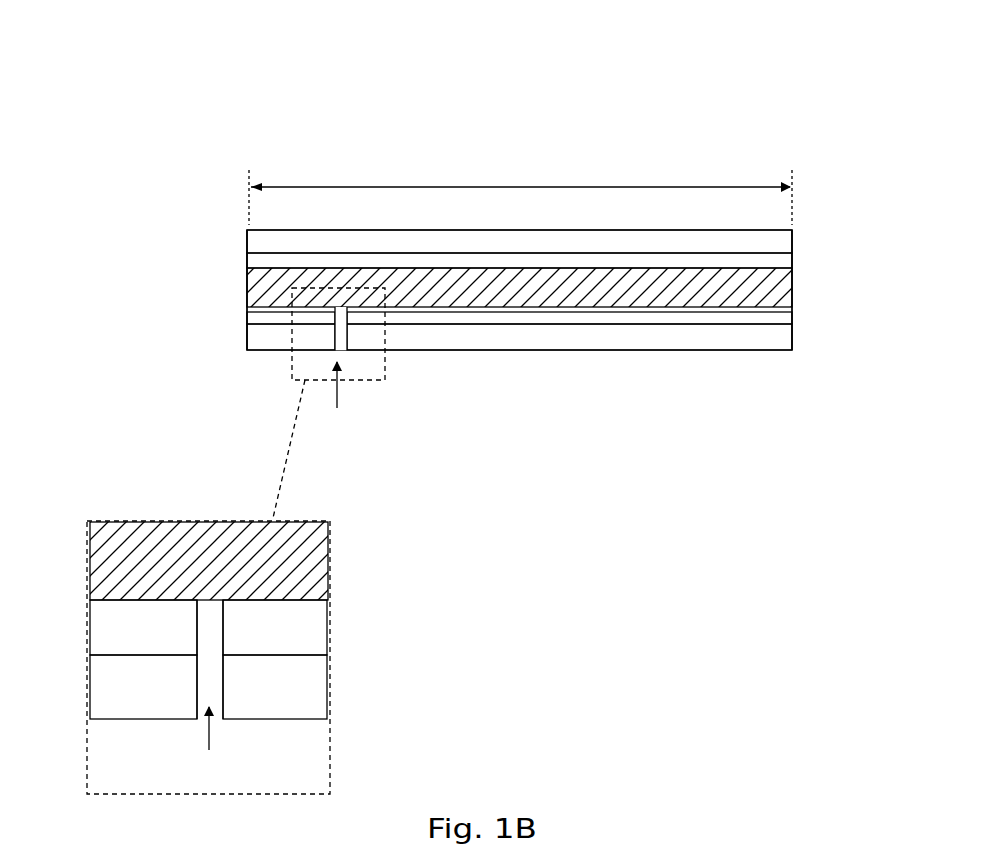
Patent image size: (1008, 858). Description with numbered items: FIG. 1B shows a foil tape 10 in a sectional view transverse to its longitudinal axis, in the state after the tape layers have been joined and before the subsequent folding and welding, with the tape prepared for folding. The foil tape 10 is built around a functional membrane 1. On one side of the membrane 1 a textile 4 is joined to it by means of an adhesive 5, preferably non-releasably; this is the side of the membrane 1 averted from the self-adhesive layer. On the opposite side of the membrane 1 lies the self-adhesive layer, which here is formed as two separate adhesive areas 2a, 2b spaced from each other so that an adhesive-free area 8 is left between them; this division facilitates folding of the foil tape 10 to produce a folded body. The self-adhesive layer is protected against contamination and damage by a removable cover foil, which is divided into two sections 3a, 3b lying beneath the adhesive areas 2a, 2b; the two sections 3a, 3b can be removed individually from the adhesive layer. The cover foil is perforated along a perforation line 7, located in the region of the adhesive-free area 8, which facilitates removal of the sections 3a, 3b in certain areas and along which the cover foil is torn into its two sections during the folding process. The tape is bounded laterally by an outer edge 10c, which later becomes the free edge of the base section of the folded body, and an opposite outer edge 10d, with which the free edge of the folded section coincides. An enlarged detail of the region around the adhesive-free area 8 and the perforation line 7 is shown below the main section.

The foil tape 10 is at (377, 130).
The membrane 1 is at (513, 295).
The textile 4 is at (792, 232).
The adhesive 5 is at (792, 257).
The outer edge 10c is at (248, 290).
The outer edge 10d is at (792, 297).
The adhesive area 2a is at (248, 320).
The adhesive area 2b is at (413, 320).
The section of cover foil 3a is at (280, 338).
The section of cover foil 3b is at (518, 335).
The adhesive-free area 8 is at (358, 313).
The perforation line 7 is at (275, 575).